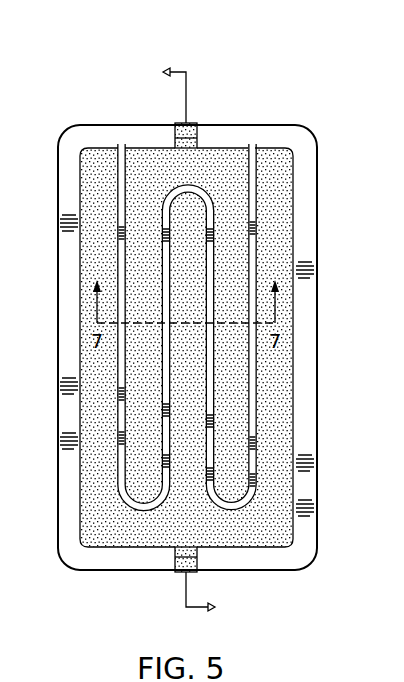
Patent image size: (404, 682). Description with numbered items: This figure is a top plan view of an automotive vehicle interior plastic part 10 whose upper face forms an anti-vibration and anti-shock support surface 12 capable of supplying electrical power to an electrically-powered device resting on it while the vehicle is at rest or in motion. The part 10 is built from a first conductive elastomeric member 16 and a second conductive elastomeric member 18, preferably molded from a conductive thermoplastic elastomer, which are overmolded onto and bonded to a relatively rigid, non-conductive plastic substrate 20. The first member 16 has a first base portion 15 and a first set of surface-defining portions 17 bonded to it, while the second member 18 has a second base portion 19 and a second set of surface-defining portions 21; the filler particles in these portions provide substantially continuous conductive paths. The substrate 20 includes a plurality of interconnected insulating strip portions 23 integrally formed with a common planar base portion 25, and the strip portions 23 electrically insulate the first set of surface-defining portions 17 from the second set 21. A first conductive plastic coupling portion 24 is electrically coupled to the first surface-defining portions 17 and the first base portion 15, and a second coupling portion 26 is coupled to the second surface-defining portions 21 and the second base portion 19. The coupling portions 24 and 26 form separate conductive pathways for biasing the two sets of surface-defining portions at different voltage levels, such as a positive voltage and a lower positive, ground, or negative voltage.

The automotive vehicle interior plastic part 10 is at (328, 165).
The support surface 12 is at (306, 227).
The first base portion 15 is at (158, 167).
The first conductive elastomeric member 16 is at (214, 138).
The first set of surface-defining portions 17 is at (117, 267).
The second conductive elastomeric member 18 is at (276, 138).
The second base portion 19 is at (210, 527).
The plastic substrate 20 is at (328, 292).
The second set of surface-defining portions 21 is at (183, 462).
The strip portions 23 is at (142, 370).
The first coupling portion 24 is at (192, 123).
The common planar base portion 25 is at (316, 549).
The second coupling portion 26 is at (178, 572).